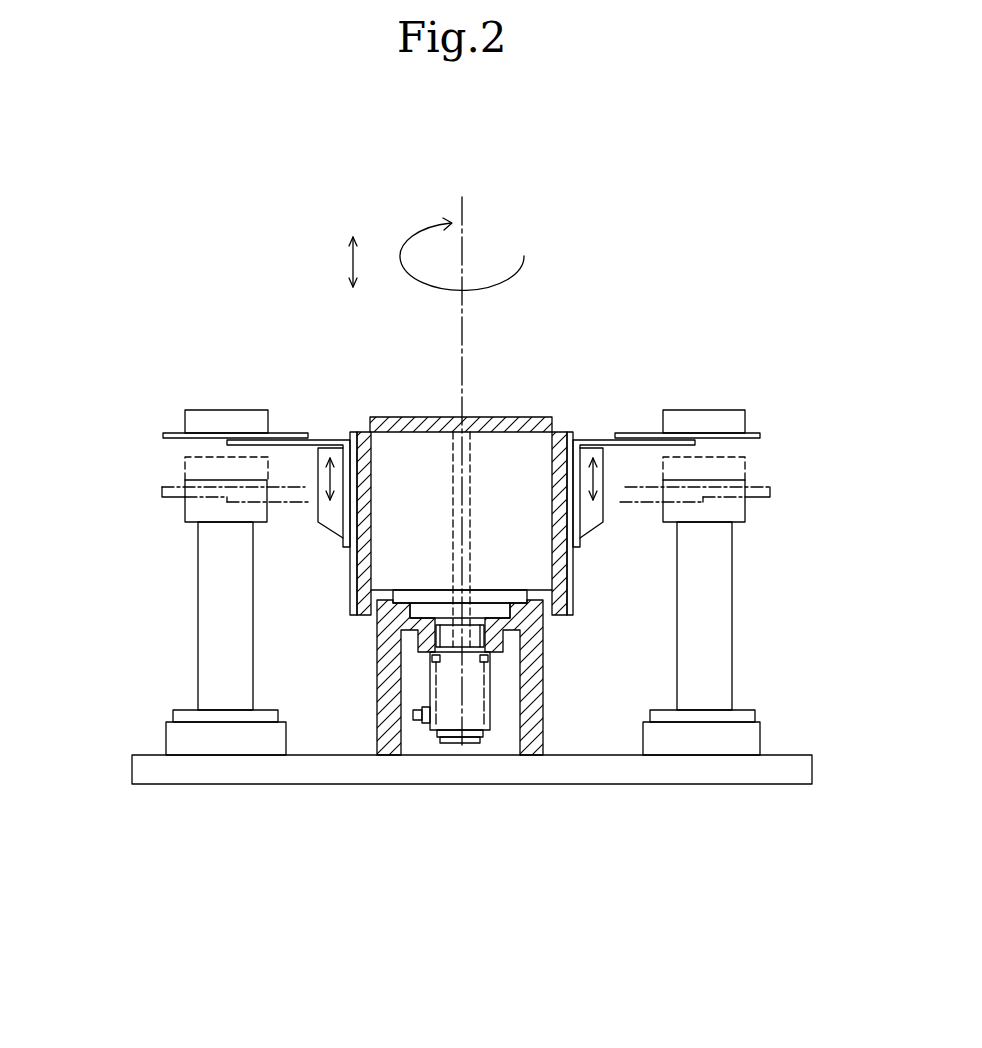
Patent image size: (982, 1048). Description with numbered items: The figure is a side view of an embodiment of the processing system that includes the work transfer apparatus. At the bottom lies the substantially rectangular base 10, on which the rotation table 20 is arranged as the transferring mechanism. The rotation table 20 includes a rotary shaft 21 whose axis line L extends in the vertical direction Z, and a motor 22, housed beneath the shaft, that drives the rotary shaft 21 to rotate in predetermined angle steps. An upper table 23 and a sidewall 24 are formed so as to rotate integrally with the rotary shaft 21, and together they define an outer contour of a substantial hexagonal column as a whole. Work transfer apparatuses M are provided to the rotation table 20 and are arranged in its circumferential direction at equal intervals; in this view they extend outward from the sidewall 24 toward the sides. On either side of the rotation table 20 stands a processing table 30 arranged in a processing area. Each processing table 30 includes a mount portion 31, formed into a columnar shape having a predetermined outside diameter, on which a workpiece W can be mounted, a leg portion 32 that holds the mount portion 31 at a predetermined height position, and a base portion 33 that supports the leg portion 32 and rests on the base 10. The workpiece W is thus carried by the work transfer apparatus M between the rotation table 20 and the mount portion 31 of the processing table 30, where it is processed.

The base 10 is at (497, 790).
The rotation table 20 is at (545, 405).
The rotary shaft 21 is at (448, 453).
The motor 22 is at (480, 702).
The upper table 23 is at (481, 427).
The sidewall 24 is at (365, 432).
The processing table 30 is at (460, 617).
The mount portion 31 is at (185, 507).
The leg portion 32 is at (200, 553).
The base portion 33 is at (173, 733).
The workpiece W is at (193, 408).
The work transfer apparatus M is at (295, 425).
The axis line L is at (462, 243).
The vertical direction Z is at (345, 262).